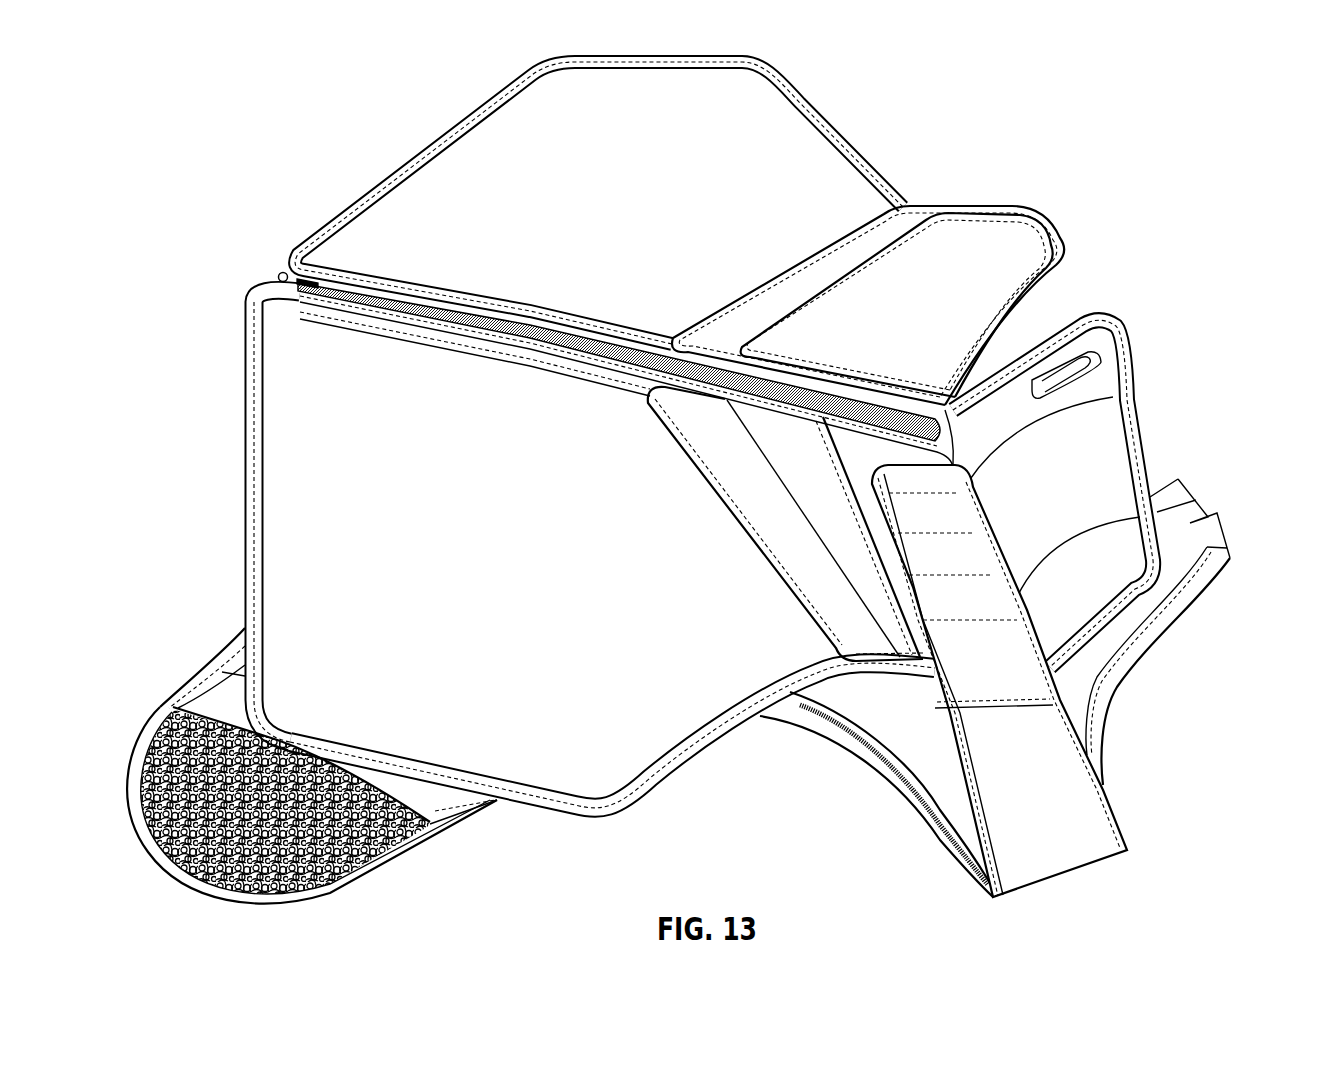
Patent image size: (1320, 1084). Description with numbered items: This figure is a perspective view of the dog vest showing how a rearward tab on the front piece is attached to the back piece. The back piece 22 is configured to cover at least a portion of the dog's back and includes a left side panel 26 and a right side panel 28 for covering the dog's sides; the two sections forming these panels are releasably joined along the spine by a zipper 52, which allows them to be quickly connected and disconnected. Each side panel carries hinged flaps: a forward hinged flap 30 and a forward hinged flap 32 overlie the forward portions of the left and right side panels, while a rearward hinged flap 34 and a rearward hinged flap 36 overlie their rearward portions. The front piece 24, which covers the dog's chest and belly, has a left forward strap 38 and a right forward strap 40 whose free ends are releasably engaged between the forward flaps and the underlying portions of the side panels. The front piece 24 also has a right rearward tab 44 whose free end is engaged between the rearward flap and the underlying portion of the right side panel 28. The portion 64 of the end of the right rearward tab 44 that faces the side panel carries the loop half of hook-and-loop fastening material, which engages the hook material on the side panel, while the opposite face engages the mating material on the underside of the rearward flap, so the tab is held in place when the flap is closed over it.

The back piece 22 is at (704, 484).
The front piece 24 is at (1127, 738).
The left side panel 26 is at (793, 82).
The right side panel 28 is at (612, 818).
The forward hinged flap 30 is at (917, 287).
The forward hinged flap 32 is at (1041, 504).
The rearward hinged flap 34 is at (599, 197).
The rearward hinged flap 36 is at (623, 593).
The left forward strap 38 is at (1180, 557).
The right forward strap 40 is at (1016, 792).
The right rearward tab 44 is at (430, 800).
The zipper 52 is at (860, 403).
The portion of the end of the right rearward tab 64 is at (360, 873).